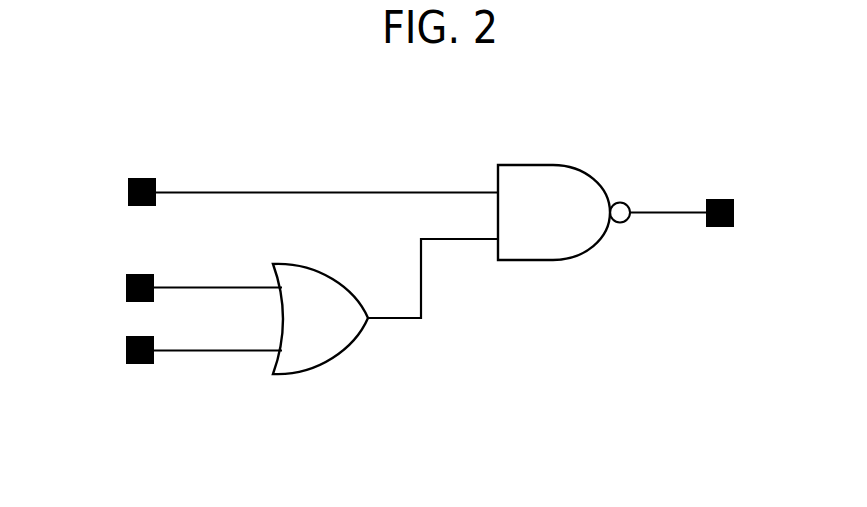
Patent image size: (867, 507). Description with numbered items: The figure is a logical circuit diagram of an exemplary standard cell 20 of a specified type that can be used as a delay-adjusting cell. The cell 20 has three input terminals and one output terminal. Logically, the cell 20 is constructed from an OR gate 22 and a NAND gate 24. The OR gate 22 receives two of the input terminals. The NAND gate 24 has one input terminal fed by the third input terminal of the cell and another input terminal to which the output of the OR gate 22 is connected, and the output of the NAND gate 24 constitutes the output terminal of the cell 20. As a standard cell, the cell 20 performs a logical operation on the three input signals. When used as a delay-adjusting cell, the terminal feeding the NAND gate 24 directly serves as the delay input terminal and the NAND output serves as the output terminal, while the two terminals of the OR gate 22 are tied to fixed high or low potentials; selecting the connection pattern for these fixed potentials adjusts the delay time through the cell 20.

The exemplary standard cell 20 is at (460, 140).
The OR gate 22 is at (333, 357).
The NAND gate 24 is at (553, 262).